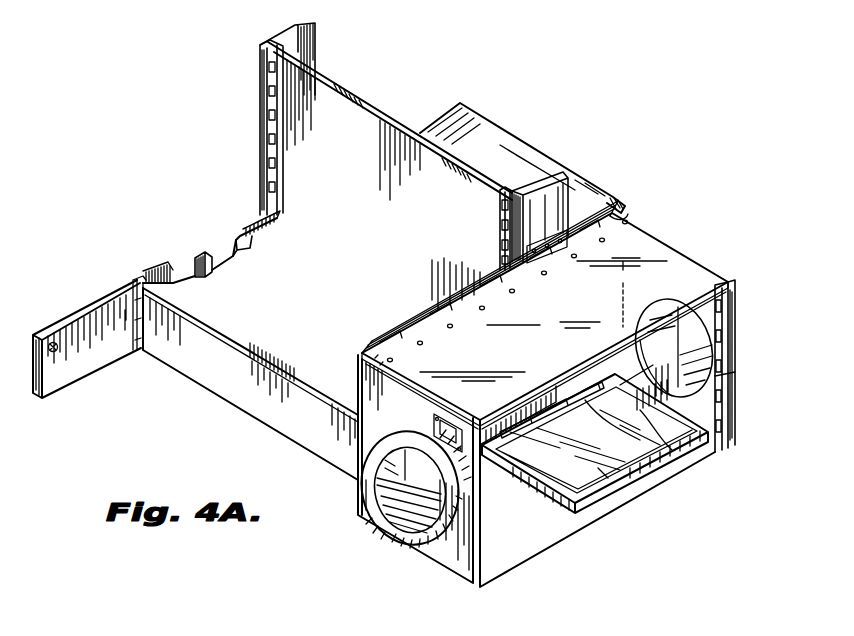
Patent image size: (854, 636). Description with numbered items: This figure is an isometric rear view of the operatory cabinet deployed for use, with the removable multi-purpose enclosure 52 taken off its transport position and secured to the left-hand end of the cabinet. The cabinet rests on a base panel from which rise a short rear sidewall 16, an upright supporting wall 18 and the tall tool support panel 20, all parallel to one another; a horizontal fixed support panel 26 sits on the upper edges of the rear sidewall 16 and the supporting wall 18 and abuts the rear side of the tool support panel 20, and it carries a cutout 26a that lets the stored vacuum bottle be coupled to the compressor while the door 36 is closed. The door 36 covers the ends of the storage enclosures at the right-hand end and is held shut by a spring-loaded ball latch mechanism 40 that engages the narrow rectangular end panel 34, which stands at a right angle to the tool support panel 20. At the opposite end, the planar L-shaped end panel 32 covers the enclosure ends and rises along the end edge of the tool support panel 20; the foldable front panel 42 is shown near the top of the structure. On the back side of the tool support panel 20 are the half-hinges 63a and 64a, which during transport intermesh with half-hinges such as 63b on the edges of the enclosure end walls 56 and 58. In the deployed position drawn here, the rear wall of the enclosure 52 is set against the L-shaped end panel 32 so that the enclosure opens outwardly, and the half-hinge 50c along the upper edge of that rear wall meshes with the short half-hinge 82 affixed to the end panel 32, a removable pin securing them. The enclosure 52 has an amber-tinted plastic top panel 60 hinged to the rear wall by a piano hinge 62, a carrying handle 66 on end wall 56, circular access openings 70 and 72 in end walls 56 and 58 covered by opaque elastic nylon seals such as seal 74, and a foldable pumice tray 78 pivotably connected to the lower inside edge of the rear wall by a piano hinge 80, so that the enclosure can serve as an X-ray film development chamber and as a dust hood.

The rear sidewall 16 is at (293, 419).
The upright supporting wall 18 is at (195, 265).
The tool support panel 20 is at (352, 112).
The fixed support panel 26 is at (248, 352).
The cutout 26a is at (233, 255).
The L-shaped end panel 32 is at (543, 190).
The narrow rectangular end panel 34 is at (317, 42).
The door 36 is at (95, 303).
The spring-loaded ball latch mechanism 40 is at (45, 363).
The foldable front panel 42 is at (482, 128).
The half-hinge 50c is at (420, 317).
The removable multi-purpose enclosure 52 is at (692, 245).
The end wall 56 is at (367, 513).
The end wall 58 is at (697, 413).
The plastic top panel 60 is at (593, 245).
The piano hinge 62 is at (643, 212).
The half-hinge 63a is at (277, 115).
The half-hinge 63b is at (722, 310).
The half-hinge 64a is at (503, 225).
The carrying handle 66 is at (530, 563).
The circular access opening 70 is at (415, 560).
The circular access opening 72 is at (700, 340).
The elastic nylon seal 74 is at (393, 533).
The foldable pumice tray 78 is at (598, 470).
The piano hinge 80 is at (573, 378).
The short half-hinge 82 is at (548, 233).